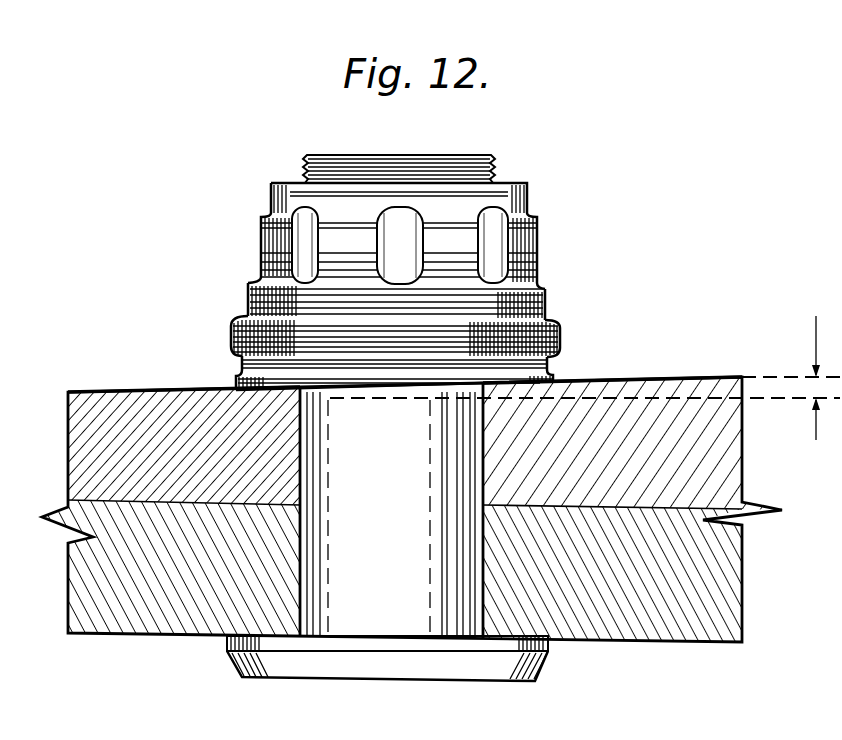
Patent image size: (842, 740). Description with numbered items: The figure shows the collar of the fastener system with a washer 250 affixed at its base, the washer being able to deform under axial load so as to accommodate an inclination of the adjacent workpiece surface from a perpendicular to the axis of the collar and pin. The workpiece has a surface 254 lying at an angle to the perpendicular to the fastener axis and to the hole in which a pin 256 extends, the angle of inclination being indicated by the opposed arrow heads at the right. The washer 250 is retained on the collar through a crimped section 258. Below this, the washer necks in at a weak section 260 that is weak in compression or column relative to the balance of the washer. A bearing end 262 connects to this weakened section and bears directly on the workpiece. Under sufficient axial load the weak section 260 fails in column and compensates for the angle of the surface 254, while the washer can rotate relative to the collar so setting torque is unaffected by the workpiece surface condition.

The washer 250 is at (570, 342).
The surface 254 is at (703, 378).
The pin 256 is at (410, 516).
The crimped section 258 is at (555, 327).
The weak section 260 is at (242, 363).
The bearing end 262 is at (557, 378).